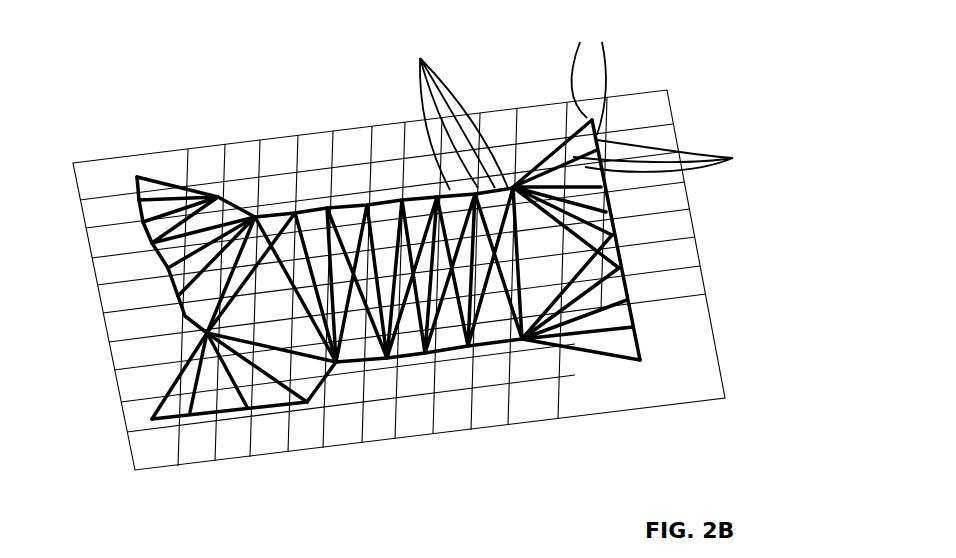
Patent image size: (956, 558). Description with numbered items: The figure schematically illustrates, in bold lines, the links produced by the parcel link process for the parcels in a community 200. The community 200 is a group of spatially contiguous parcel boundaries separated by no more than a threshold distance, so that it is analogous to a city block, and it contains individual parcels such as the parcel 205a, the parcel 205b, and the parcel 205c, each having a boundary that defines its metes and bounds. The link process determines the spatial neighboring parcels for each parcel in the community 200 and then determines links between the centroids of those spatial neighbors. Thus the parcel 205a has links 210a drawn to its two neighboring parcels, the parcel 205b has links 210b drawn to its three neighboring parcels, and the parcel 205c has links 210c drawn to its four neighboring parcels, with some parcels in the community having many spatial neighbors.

The community of parcels 200 is at (172, 75).
The parcel 205a is at (660, 106).
The parcel 205b is at (666, 143).
The parcel 205c is at (466, 120).
The links 210a is at (604, 73).
The links 210b is at (733, 158).
The links 210c is at (452, 107).